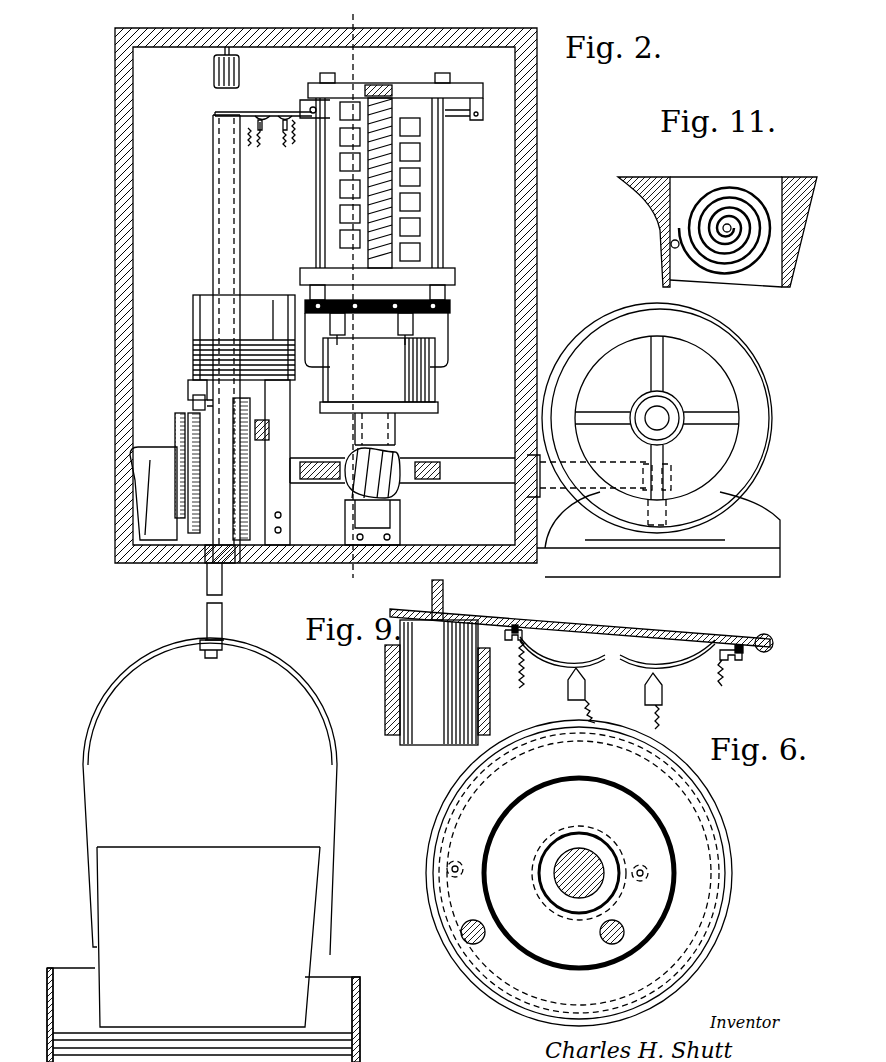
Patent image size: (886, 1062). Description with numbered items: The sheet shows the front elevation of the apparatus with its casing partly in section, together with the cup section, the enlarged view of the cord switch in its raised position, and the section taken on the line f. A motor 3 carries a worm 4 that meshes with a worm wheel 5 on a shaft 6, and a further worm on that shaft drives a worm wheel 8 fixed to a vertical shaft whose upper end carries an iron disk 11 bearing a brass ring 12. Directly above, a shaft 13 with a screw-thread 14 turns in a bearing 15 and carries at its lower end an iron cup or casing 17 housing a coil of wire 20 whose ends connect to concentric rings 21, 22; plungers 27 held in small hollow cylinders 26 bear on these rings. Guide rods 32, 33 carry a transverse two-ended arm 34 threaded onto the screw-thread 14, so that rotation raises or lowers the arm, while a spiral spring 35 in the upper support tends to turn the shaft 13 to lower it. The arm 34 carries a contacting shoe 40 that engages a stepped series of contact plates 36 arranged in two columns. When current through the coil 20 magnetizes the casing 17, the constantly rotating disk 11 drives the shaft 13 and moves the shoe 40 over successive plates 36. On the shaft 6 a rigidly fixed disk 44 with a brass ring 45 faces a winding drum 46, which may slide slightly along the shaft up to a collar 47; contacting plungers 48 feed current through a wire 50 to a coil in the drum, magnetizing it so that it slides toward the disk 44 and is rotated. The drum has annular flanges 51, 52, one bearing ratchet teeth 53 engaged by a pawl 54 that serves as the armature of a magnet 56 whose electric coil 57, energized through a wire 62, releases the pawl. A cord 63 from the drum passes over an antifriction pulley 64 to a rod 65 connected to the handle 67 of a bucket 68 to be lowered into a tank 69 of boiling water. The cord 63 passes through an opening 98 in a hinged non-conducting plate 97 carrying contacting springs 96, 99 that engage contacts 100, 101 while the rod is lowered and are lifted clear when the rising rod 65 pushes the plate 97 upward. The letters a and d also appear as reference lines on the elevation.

In FIG. 2, the motor 3 is at (750, 334).
In FIG. 2, the worm 4 is at (672, 470).
In FIG. 2, the worm wheel 5 is at (665, 512).
In FIG. 2, the shaft 6 is at (535, 483).
In FIG. 2, the worm wheel 8 is at (425, 468).
In FIG. 2, the disk 11 is at (402, 456).
In FIG. 2, the metallic ring 12 is at (420, 406).
In FIG. 2, the shaft 13 is at (372, 364).
In FIG. 6, the shaft 13 is at (594, 860).
In FIG. 2, the screw-thread 14 is at (420, 150).
In FIG. 2, the bearing 15 is at (307, 90).
In FIG. 2, the cylindrical cup or casing 17 is at (426, 388).
In FIG. 6, the cylindrical cup or casing 17 is at (445, 792).
In FIG. 6, the coil of wire 20 is at (448, 872).
In FIG. 6, the ring 21 is at (579, 873).
In FIG. 6, the ring 22 is at (579, 873).
In FIG. 2, the small hollow cylinder 26 is at (400, 338).
In FIG. 6, the plunger 27 is at (600, 933).
In FIG. 2, the guide rod 32 is at (318, 200).
In FIG. 2, the guide rod 33 is at (443, 190).
In FIG. 2, the transverse two-ended arm 34 is at (450, 279).
In FIG. 2, the spiral spring 35 is at (372, 90).
In FIG. 11, the spiral spring 35 is at (735, 180).
In FIG. 2, the contact plates 36 is at (340, 188).
In FIG. 2, the contacting shoe 40 is at (205, 403).
In FIG. 2, the disk 44 is at (175, 425).
In FIG. 2, the brass ring 45 is at (154, 493).
In FIG. 2, the winding drum 46 is at (237, 567).
In FIG. 2, the collar 47 is at (285, 500).
In FIG. 2, the contacting plungers 48 is at (290, 425).
In FIG. 2, the wire 50 is at (301, 132).
In FIG. 9, the wire 50 is at (722, 680).
In FIG. 2, the annular flange 51 is at (209, 473).
In FIG. 2, the annular flange 52 is at (240, 458).
In FIG. 2, the ratchet teeth 53 is at (193, 405).
In FIG. 2, the pawl 54 is at (190, 388).
In FIG. 2, the magnet 56 is at (193, 313).
In FIG. 2, the electric coil 57 is at (250, 306).
In FIG. 2, the wire 62 is at (213, 130).
In FIG. 9, the wire 62 is at (520, 672).
In FIG. 9, the cord or flexible member 63 is at (432, 588).
In FIG. 2, the antifriction pulley 64 is at (214, 80).
In FIG. 2, the rod 65 is at (207, 603).
In FIG. 9, the rod 65 is at (400, 736).
In FIG. 2, the handle 67 is at (110, 690).
In FIG. 2, the bucket or vessel 68 is at (208, 937).
In FIG. 2, the tank 69 is at (203, 1015).
In FIG. 2, the metallic contacting spring 96 is at (278, 131).
In FIG. 9, the metallic contacting spring 96 is at (640, 663).
In FIG. 2, the hinged plate 97 is at (265, 103).
In FIG. 9, the hinged plate 97 is at (665, 641).
In FIG. 9, the opening 98 is at (445, 620).
In FIG. 2, the spring contact-member 99 is at (257, 106).
In FIG. 9, the spring contact-member 99 is at (555, 657).
In FIG. 2, the contact 100 is at (302, 142).
In FIG. 9, the contact 100 is at (662, 698).
In FIG. 2, the contact 101 is at (260, 151).
In FIG. 9, the contact 101 is at (568, 692).
In FIG. 2, the section line a is at (238, 303).
In FIG. 2, the bracket d is at (438, 263).
In FIG. 2, the section line f— f is at (483, 90).
In FIG. 11, the section line f— f is at (645, 200).